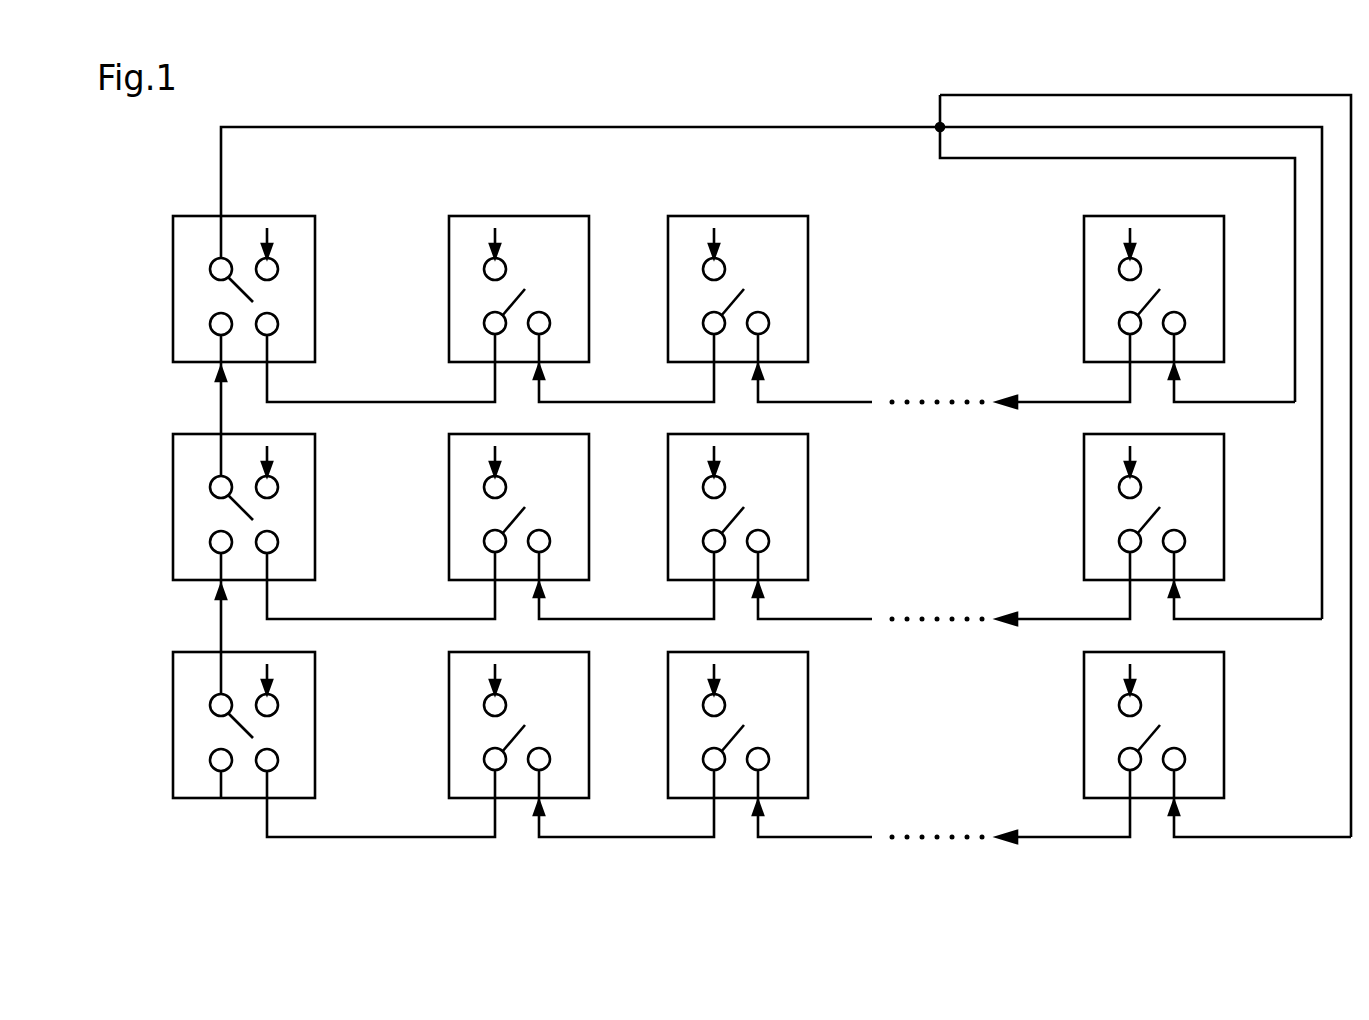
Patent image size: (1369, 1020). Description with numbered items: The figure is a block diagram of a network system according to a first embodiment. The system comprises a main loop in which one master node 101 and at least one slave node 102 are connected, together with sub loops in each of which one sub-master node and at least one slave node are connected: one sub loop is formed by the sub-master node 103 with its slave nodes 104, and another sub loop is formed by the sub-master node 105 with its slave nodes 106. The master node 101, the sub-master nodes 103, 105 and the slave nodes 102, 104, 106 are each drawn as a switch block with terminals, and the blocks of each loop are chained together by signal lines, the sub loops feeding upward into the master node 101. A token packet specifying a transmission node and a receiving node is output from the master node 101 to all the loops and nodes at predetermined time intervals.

The master node 101 is at (315, 233).
The slave node 102 is at (668, 232).
The sub-master node 103 is at (315, 457).
The slave node 104 is at (668, 483).
The sub-master node 105 is at (315, 675).
The slave node 106 is at (668, 703).